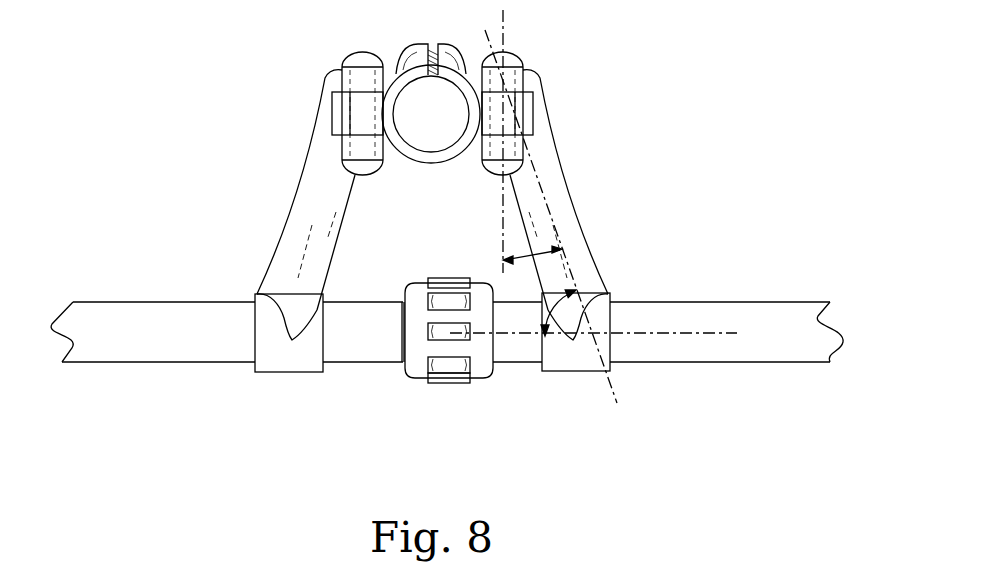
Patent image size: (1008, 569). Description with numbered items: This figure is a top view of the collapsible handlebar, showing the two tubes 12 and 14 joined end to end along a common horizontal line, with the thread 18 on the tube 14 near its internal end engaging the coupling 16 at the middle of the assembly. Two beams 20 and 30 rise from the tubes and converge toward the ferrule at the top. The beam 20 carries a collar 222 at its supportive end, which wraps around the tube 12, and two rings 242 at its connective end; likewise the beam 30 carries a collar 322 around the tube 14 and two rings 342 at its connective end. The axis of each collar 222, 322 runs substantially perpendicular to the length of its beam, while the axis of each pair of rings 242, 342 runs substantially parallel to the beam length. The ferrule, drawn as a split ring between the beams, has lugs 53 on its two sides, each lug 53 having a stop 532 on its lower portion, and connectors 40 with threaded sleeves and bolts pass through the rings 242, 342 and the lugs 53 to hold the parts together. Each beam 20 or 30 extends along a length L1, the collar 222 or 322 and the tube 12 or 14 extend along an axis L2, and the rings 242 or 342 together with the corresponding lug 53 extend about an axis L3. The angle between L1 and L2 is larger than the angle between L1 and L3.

The tube 12 is at (818, 336).
The tube 14 is at (122, 312).
The coupling nut 16 is at (412, 378).
The thread 18 is at (404, 350).
The beam 20 is at (553, 177).
The beam 30 is at (293, 243).
The connector 40 is at (348, 54).
The lug 53 is at (357, 112).
The collar 222 is at (573, 357).
The rings 242 is at (488, 152).
The collar 322 is at (283, 358).
The rings 342 is at (370, 75).
The stop 532 is at (515, 98).
The length L1 is at (613, 392).
The axis L2 is at (655, 333).
The axis L3 is at (505, 20).